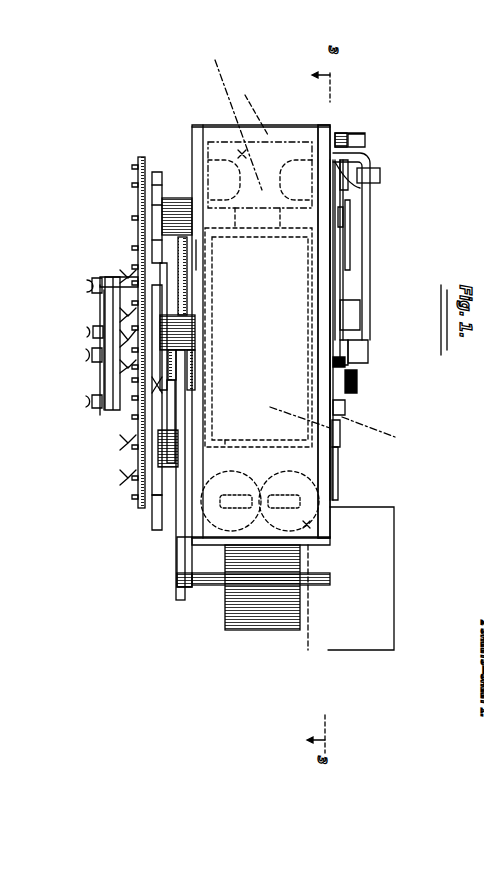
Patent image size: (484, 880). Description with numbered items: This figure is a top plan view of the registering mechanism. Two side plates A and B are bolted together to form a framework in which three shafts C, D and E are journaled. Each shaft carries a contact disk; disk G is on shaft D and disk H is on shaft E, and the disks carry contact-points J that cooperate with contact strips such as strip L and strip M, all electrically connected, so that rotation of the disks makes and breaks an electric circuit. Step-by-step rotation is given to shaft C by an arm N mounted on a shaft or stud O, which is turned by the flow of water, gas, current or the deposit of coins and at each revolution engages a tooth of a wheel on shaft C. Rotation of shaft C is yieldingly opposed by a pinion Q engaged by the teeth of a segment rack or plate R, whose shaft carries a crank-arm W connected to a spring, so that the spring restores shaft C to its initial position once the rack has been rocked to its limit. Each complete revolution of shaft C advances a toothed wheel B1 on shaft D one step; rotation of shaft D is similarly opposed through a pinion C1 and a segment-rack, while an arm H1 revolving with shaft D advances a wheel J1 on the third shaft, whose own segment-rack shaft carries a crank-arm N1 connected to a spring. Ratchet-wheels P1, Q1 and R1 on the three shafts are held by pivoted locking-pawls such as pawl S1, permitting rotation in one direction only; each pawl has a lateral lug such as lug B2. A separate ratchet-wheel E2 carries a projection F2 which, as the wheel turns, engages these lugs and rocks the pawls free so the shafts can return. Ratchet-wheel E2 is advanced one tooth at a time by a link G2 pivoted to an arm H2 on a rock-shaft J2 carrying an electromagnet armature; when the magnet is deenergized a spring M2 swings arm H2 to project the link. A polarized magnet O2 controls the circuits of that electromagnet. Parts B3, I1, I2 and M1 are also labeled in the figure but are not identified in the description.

The side plate A is at (197, 127).
The side plate B is at (321, 127).
The wheel B1 is at (160, 313).
The lug or projection B2 is at (340, 305).
The part B3 is at (15, 780).
The shaft C is at (359, 267).
The pinion C1 is at (190, 318).
The shaft D is at (188, 378).
The shaft E is at (175, 490).
The ratchet-wheel E2 is at (370, 355).
The lug or projection F2 is at (355, 397).
The disk G is at (133, 293).
The link G2 is at (370, 227).
The disk H is at (135, 425).
The arm H1 is at (150, 395).
The arm H2 is at (385, 390).
The wall I1 is at (180, 257).
The rod I2 is at (342, 417).
The contact-points J is at (133, 497).
The wheel J1 is at (157, 170).
The rock-shaft J2 is at (244, 103).
The contact arm or strip L is at (127, 372).
The contact arm or strip M is at (133, 267).
The rod M1 is at (335, 392).
The spring M2 is at (367, 190).
The arm N is at (180, 553).
The crank-arm N1 is at (330, 273).
The shaft or stud O is at (206, 586).
The polarized magnet O2 is at (341, 602).
The ratchet-wheel P1 is at (339, 470).
The pinion Q is at (172, 462).
The ratchet-wheel Q1 is at (360, 390).
The segment rack or plate R is at (188, 390).
The ratchet-wheel R1 is at (350, 233).
The pawl S1 is at (325, 399).
The crank-arm W is at (333, 250).